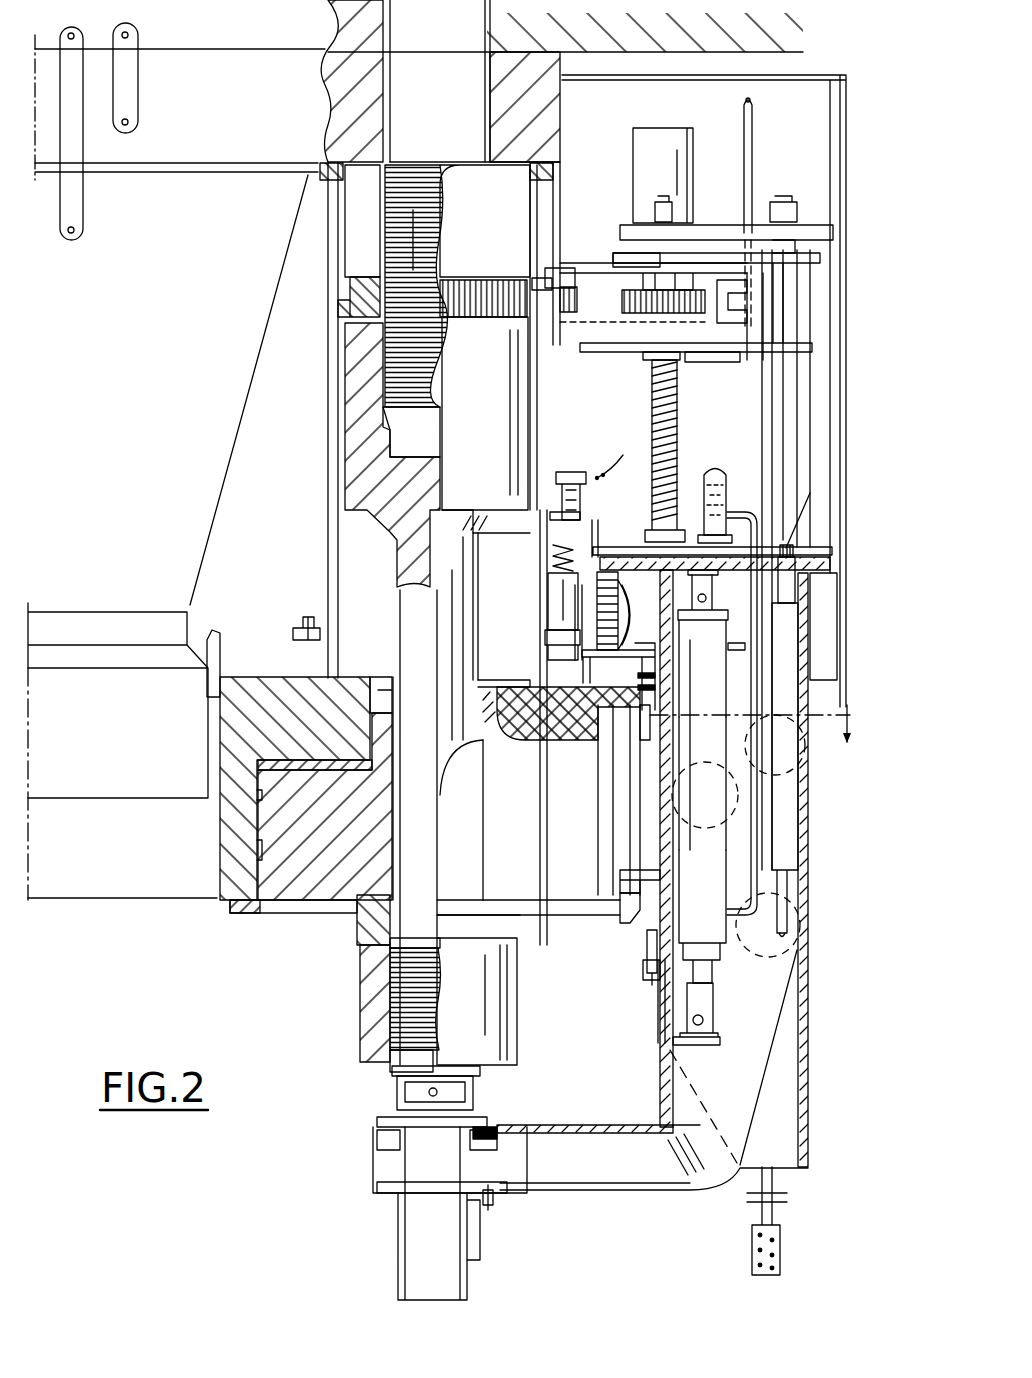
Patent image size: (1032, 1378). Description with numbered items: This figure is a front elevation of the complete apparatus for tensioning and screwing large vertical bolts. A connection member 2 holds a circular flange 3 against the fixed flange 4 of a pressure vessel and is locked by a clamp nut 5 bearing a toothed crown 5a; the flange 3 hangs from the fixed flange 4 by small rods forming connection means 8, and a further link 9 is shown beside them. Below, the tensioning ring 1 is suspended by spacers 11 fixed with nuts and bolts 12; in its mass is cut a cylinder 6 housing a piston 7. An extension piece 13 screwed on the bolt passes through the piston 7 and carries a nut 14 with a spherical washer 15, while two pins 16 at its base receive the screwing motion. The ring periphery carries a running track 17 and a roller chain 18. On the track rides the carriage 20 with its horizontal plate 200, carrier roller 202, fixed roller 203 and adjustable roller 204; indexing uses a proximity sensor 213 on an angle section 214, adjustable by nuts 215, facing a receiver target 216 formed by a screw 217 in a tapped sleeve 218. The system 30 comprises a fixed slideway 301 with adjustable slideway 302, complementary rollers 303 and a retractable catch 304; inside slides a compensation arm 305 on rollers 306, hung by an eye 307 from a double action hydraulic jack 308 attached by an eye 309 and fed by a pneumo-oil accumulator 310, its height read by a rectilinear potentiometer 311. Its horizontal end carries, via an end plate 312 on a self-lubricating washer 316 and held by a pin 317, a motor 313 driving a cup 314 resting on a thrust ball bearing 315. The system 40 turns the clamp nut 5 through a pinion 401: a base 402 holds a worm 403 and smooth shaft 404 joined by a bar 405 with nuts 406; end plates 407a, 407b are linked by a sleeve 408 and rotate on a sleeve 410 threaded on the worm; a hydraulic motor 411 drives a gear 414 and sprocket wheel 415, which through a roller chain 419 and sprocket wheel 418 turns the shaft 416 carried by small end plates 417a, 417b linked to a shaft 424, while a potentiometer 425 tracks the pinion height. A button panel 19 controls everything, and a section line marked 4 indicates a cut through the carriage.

The tensioning ring 1 is at (156, 908).
The connection member 2 is at (418, 185).
The flange 3 is at (188, 152).
The fixed flange 4 is at (526, 395).
The clamp nut 5 is at (373, 182).
The toothed crown 5a is at (352, 290).
The cylinder 6 is at (242, 820).
The piston 7 is at (298, 900).
The connection means 8 is at (138, 32).
The link 9 is at (78, 212).
The spacer 11 is at (322, 522).
The nuts and bolts 12 is at (295, 633).
The extension piece 13 is at (360, 447).
The nut 14 is at (368, 1018).
The washer 15 is at (358, 945).
The pins 16 is at (400, 1090).
The running track 17 is at (630, 670).
The roller chain 18 is at (633, 708).
The button panel 19 is at (768, 1240).
The carriage 20 is at (605, 541).
The screwing system for the extension piece 30 is at (806, 1055).
The screwing system for the clamp nut 40 is at (806, 192).
The horizontal plate 200 is at (820, 575).
The carrier roller 202 is at (585, 650).
The fixed roller 203 is at (650, 707).
The adjustable roller 204 is at (563, 740).
The proximity sensor 213 is at (562, 478).
The angle section 214 is at (598, 481).
The nuts 215 is at (557, 515).
The receiver target 216 is at (555, 548).
The screw 217 is at (552, 570).
The tapped sleeve 218 is at (557, 607).
The fixed slideway 301 is at (660, 1030).
The adjustable slideway 302 is at (793, 1093).
The complementary rollers 303 is at (640, 880).
The retractable catch 304 is at (628, 905).
The compensation arm 305 is at (666, 1092).
The rollers 306 is at (738, 734).
The eye 307 is at (711, 646).
The double action hydraulic jack 308 is at (690, 850).
The eye 309 is at (713, 1030).
The pneumo-oil accumulator 310 is at (712, 473).
The rectilinear potentiometer 311 is at (797, 863).
The end plate 312 is at (378, 1152).
The motor 313 is at (395, 1247).
The cup 314 is at (466, 1093).
The thrust ball bearing 315 is at (397, 1120).
The self-lubricating washer 316 is at (488, 1128).
The pin 317 is at (492, 1190).
The pinion 401 is at (565, 280).
The base 402 is at (812, 535).
The worm 403 is at (652, 407).
The smooth shaft 404 is at (777, 412).
The bar 405 is at (714, 232).
The nuts 406 is at (655, 212).
The top end plate 407a is at (627, 257).
The end plate 407b is at (700, 363).
The sleeve 408 is at (790, 305).
The sleeve 410 is at (605, 293).
The hydraulic motor 411 is at (645, 133).
The gear 414 is at (597, 330).
The sprocket wheel 415 is at (647, 330).
The shaft 416 is at (553, 282).
The small end plate 417a is at (547, 267).
The small end plate 417b is at (560, 305).
The sprocket wheel 418 is at (545, 335).
The roller chain 419 is at (540, 370).
The shaft 424 is at (733, 322).
The potentiometer 425 is at (752, 388).